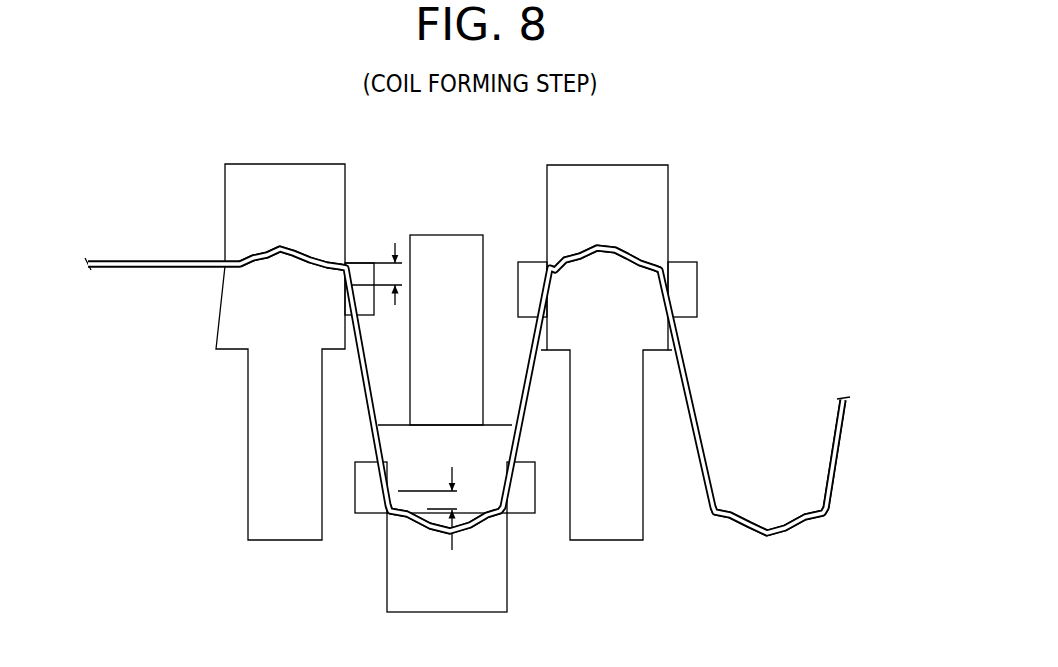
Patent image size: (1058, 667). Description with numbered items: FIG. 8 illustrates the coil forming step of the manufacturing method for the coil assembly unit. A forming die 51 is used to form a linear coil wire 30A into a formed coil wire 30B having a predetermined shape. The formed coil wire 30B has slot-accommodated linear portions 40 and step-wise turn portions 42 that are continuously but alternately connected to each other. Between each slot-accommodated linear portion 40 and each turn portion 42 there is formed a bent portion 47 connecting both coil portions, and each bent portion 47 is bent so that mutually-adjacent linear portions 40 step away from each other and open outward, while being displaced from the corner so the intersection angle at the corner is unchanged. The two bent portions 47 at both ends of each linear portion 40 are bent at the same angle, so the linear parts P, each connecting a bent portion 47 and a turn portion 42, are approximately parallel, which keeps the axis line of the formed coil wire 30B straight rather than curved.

The forming die 51 is at (257, 154).
The bent portion 47 is at (349, 281).
The turn portion 42 is at (267, 247).
The slot-accommodated linear portion 40 is at (357, 380).
The linear coil wire 30A is at (132, 250).
The formed coil wire 30B is at (700, 535).
The linear part P is at (402, 396).